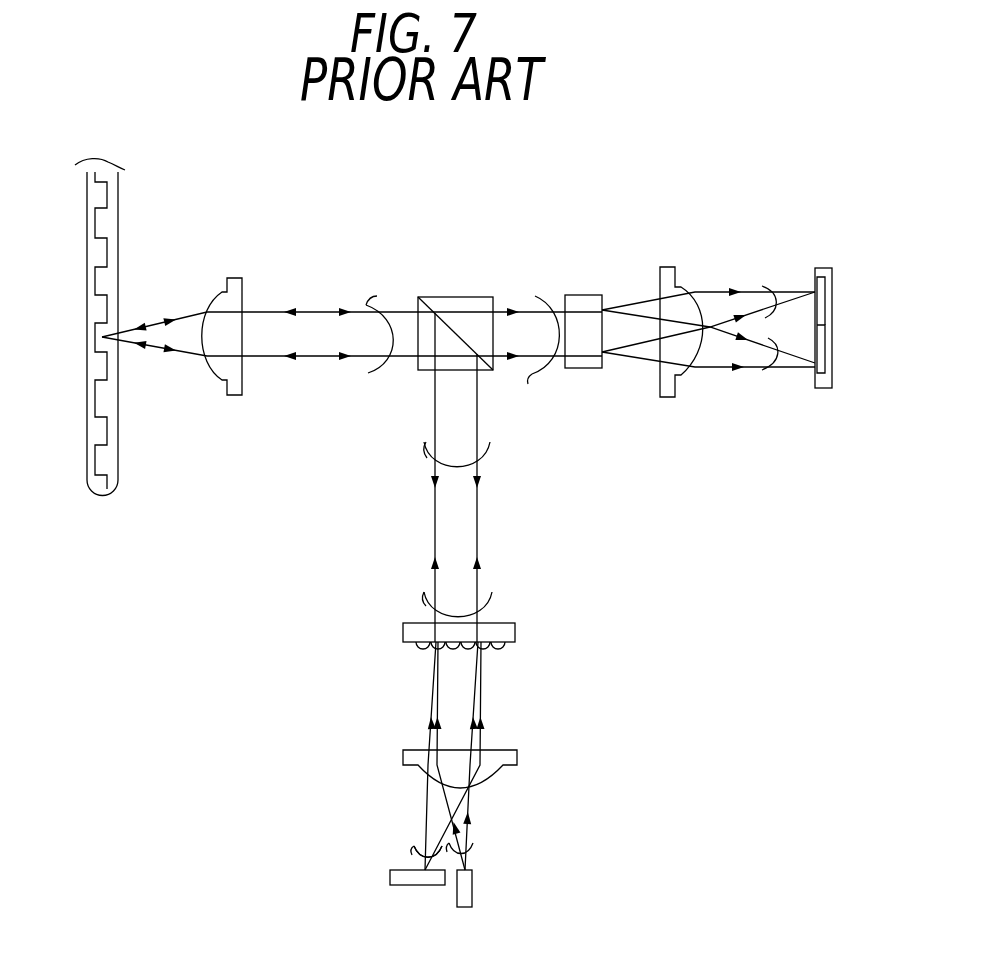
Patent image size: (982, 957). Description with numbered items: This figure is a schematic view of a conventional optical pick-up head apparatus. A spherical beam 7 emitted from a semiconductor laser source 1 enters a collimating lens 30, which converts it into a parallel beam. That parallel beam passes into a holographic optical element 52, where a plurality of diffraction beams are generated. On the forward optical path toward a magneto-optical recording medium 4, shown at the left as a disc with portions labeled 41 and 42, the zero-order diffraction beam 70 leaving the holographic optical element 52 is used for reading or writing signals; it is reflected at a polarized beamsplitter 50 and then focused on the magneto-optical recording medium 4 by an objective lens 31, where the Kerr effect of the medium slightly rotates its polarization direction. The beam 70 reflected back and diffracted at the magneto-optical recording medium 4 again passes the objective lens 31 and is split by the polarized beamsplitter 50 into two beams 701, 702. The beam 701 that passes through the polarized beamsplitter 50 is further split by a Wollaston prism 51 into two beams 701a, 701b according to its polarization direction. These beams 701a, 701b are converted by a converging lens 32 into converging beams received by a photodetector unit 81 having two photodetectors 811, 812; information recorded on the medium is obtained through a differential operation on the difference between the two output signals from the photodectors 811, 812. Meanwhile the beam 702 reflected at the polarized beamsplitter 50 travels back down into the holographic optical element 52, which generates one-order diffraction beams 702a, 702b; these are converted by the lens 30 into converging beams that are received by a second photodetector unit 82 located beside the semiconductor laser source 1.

The semiconductor laser source 1 is at (452, 903).
The magneto-optical recording medium 4 is at (100, 330).
The spherical beam 7 is at (473, 842).
The collimating lens 30 is at (518, 755).
The objective lens 31 is at (243, 280).
The converging lens 32 is at (667, 398).
The disc substrate 41 is at (89, 479).
The disc recording layer 42 is at (121, 463).
The polarized beamsplitter 50 is at (460, 296).
The Wollaston prism 51 is at (584, 295).
The holographic optical element 52 is at (517, 629).
The 0-order diffraction beam 70 is at (368, 373).
The photodetector unit 81 is at (813, 342).
The photodetector unit 82 is at (387, 878).
The beam 701 is at (538, 295).
The beam 701a is at (762, 286).
The beam 701b is at (762, 370).
The beam 702 is at (490, 442).
The 1-order diffraction beam 702a is at (408, 847).
The 1-order diffraction beam 702b is at (359, 837).
The photodetector 811 is at (814, 284).
The photodetector 812 is at (815, 371).